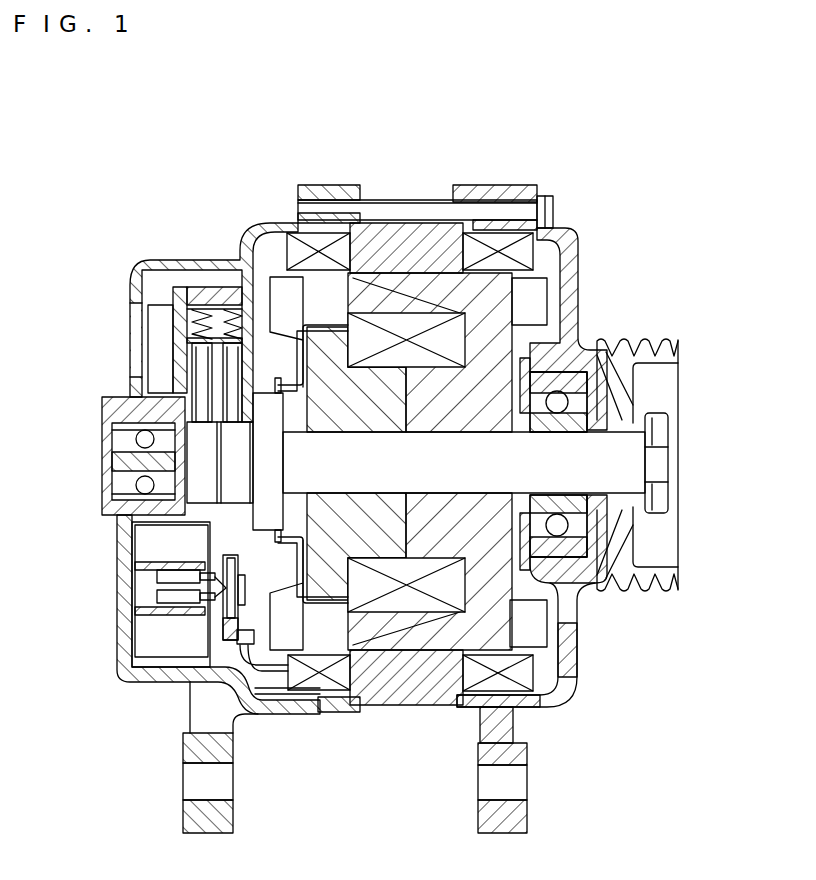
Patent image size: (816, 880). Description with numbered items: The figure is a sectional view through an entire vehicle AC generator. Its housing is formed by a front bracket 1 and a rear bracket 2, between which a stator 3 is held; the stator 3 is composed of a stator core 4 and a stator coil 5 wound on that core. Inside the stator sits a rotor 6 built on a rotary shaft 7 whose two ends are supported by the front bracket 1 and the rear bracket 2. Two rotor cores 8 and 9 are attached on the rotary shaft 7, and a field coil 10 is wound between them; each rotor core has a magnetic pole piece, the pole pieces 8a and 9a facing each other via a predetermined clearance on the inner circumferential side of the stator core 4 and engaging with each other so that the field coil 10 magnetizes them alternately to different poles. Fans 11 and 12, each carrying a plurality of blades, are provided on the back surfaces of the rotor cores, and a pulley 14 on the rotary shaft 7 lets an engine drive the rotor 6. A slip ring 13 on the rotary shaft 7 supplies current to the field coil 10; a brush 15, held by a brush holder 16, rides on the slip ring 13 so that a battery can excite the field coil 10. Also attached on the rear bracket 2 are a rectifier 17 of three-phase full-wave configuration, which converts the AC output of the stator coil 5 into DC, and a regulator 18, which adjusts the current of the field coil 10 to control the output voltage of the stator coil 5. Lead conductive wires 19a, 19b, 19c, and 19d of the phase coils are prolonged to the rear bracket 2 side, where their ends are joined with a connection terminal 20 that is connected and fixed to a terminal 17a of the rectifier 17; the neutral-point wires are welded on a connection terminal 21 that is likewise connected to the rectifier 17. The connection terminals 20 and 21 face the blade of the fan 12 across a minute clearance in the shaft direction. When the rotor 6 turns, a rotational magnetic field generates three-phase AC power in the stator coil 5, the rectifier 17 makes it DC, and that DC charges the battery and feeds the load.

The front bracket 1 is at (577, 653).
The rear bracket 2 is at (132, 678).
The stator 3 is at (397, 228).
The stator core 4 is at (349, 453).
The stator coil 5 is at (493, 245).
The rotor 6 is at (497, 347).
The rotary shaft 7 is at (610, 465).
The rotor core 8 is at (410, 444).
The magnetic pole piece 8a is at (330, 290).
The rotor core 9 is at (438, 542).
The magnetic pole piece 9a is at (381, 283).
The field coil 10 is at (398, 598).
The fan 11 is at (535, 297).
The fan 12 is at (282, 292).
The slip ring 13 is at (197, 463).
The pulley 14 is at (630, 363).
The brush 15 is at (203, 352).
The brush holder 16 is at (222, 290).
The rectifier 17 is at (152, 598).
The terminal 17a is at (221, 578).
The regulator 18 is at (178, 315).
The lead conductive wire 19a is at (284, 716).
The lead conductive wire 19b is at (280, 669).
The lead conductive wire 19c is at (280, 669).
The lead conductive wire 19d is at (268, 668).
The connection terminal 20 is at (181, 662).
The connection terminal 21 is at (240, 640).